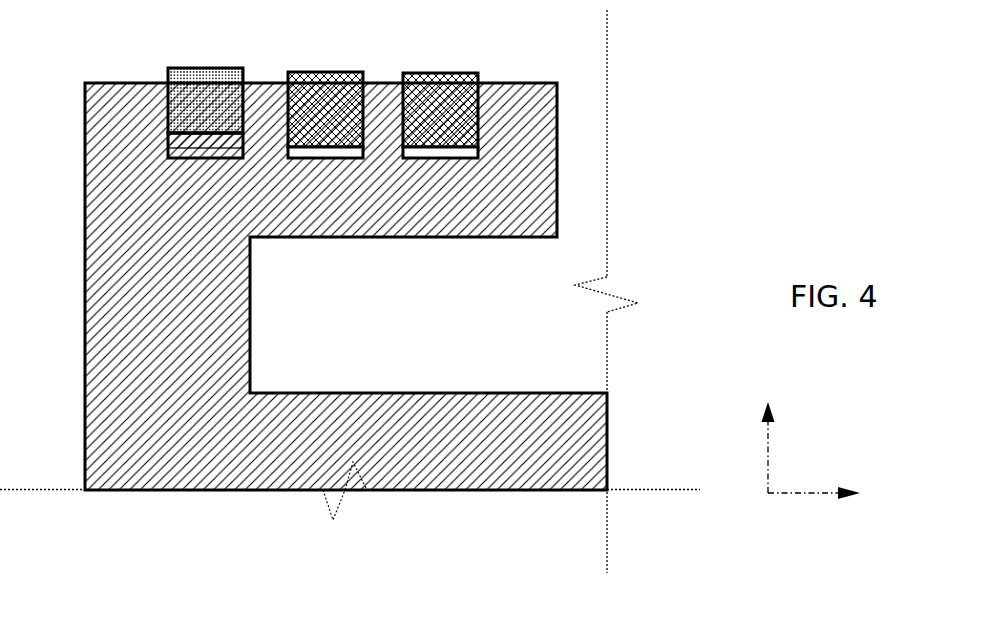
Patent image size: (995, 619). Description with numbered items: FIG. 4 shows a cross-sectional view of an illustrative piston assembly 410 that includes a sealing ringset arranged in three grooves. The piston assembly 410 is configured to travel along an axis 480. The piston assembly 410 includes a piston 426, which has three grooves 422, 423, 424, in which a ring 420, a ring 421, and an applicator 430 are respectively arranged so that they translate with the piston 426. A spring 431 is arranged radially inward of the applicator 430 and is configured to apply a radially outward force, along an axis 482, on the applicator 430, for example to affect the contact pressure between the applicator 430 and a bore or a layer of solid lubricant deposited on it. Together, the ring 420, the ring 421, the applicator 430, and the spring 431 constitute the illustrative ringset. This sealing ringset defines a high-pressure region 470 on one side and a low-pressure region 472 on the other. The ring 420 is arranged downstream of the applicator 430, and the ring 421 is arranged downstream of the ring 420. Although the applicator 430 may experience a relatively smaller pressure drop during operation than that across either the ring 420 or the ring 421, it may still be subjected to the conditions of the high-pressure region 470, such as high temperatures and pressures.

The piston assembly 410 is at (561, 54).
The ring 420 is at (323, 72).
The ring 421 is at (425, 73).
The groove 422 is at (335, 160).
The groove 423 is at (437, 160).
The groove 424 is at (240, 158).
The piston 426 is at (176, 330).
The applicator 430 is at (185, 68).
The spring 431 is at (225, 68).
The high-pressure region 470 is at (74, 356).
The low-pressure region 472 is at (514, 372).
The axis 480 is at (841, 487).
The axis 482 is at (770, 429).